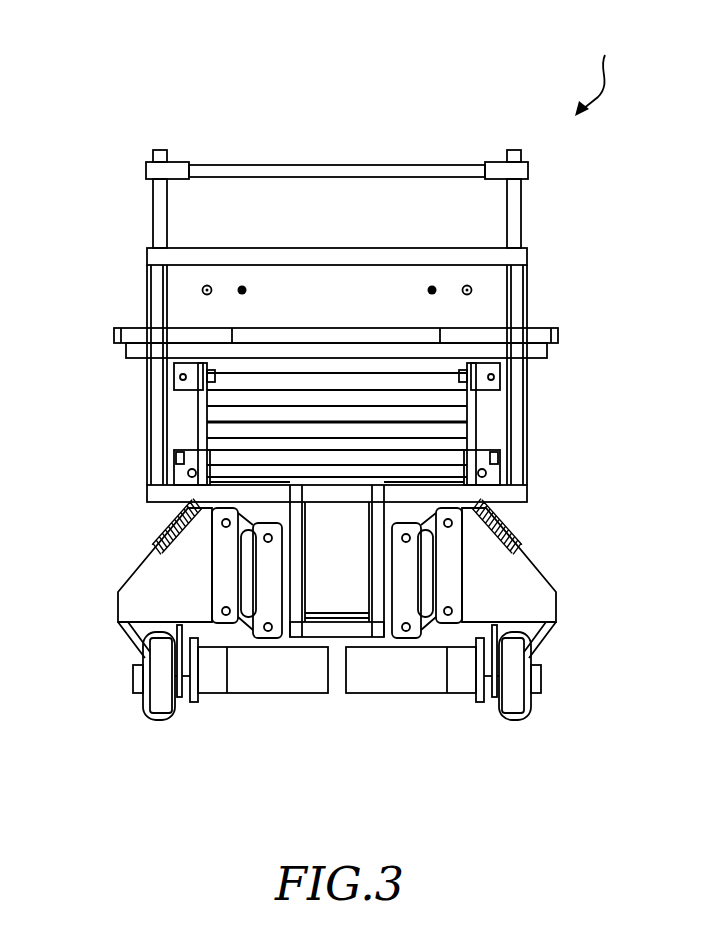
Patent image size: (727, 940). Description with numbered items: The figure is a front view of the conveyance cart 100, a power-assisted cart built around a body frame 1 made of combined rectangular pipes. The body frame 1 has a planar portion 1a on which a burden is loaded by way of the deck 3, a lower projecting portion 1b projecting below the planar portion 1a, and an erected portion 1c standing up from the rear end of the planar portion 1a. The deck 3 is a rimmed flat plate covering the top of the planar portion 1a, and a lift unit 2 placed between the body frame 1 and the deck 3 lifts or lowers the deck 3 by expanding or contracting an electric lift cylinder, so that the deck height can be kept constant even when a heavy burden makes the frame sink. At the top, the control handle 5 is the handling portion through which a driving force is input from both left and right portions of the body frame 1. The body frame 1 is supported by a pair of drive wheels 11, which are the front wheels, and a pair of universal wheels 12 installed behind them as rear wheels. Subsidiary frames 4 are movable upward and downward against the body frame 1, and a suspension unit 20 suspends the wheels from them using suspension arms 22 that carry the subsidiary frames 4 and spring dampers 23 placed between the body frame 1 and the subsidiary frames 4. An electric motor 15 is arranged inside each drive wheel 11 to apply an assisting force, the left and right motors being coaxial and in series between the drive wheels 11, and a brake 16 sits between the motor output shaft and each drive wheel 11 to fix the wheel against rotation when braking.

The conveyance cart 100 is at (604, 68).
The body frame 1 is at (536, 452).
The planar portion 1a is at (517, 492).
The lower projecting portion 1b is at (338, 630).
The erected portion 1c is at (514, 415).
The lift unit 2 is at (176, 412).
The deck 3 is at (360, 326).
The subsidiary frame 4 is at (137, 592).
The control handle 5 is at (268, 170).
The drive wheel 11 is at (155, 713).
The universal wheel 12 is at (165, 714).
The electric motor 15 is at (286, 680).
The brake 16 is at (211, 680).
The suspension unit 20 is at (137, 552).
The suspension arm 22 is at (252, 612).
The spring damper 23 is at (165, 515).